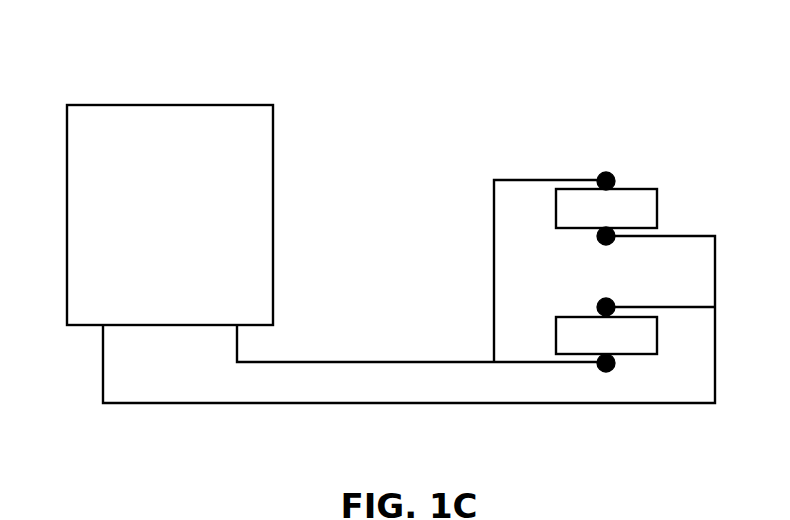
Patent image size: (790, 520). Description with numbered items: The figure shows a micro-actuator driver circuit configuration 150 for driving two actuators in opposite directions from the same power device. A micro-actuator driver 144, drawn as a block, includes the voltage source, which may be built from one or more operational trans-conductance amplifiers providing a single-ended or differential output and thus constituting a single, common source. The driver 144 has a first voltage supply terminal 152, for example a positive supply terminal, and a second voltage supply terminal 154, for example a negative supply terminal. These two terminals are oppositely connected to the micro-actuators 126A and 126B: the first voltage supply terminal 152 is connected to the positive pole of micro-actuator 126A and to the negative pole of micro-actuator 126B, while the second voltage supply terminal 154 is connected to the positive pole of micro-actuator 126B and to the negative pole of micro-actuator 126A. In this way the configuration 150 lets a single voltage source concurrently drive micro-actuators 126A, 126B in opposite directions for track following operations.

The micro-actuator driver circuit configuration 150 is at (567, 71).
The micro-actuator driver 144 is at (257, 131).
The first voltage supply terminal 152 is at (240, 347).
The second voltage supply terminal 154 is at (103, 351).
The micro-actuator 126A is at (646, 204).
The micro-actuator 126B is at (644, 340).